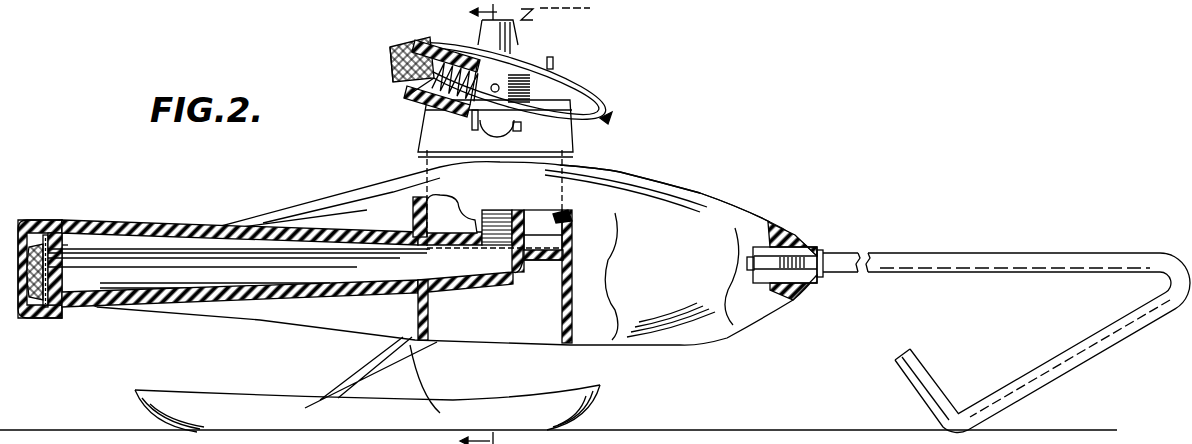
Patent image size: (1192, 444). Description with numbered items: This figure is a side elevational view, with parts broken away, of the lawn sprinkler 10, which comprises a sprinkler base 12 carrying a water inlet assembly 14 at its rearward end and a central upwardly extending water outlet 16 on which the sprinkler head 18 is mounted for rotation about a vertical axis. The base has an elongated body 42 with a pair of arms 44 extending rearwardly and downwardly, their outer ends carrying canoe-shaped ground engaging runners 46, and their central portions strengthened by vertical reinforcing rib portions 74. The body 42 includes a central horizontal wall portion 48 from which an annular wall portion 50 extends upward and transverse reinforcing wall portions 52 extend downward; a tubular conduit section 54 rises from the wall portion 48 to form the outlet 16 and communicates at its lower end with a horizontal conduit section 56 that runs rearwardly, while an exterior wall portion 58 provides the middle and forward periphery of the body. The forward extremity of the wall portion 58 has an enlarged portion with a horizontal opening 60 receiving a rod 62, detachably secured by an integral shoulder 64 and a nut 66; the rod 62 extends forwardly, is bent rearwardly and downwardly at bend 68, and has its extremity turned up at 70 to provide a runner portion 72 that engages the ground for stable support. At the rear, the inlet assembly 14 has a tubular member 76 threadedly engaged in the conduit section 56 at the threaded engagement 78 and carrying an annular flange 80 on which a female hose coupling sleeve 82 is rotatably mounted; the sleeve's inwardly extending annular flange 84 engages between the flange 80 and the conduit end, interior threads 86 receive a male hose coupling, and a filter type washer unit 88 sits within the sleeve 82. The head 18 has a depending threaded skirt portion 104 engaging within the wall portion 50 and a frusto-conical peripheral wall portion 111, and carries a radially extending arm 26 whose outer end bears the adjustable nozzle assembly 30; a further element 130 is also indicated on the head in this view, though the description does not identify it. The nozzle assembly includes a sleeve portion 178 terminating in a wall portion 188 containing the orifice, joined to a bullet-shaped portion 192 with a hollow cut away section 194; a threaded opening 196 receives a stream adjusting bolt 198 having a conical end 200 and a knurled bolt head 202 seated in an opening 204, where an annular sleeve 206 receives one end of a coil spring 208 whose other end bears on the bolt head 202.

The lawn sprinkler 10 is at (676, 152).
The sprinkler base 12 is at (296, 200).
The water inlet assembly 14 is at (56, 218).
The water outlet 16 is at (540, 213).
The sprinkler head 18 is at (593, 90).
The arm 26 is at (503, 130).
The adjustable nozzle assembly 30 is at (606, 118).
The body 42 is at (667, 338).
The arms 44 is at (380, 360).
The ground engaging runners 46 is at (410, 423).
The central horizontal wall portion 48 is at (570, 238).
The annular wall portion 50 is at (573, 222).
The transverse reinforcing wall portions 52 is at (560, 320).
The conduit section 54 is at (272, 220).
The conduit section 56 is at (367, 297).
The exterior wall portion 58 is at (710, 212).
The opening 60 is at (797, 277).
The rod 62 is at (940, 265).
The shoulder 64 is at (823, 250).
The nut 66 is at (760, 283).
The bend 68 is at (1160, 278).
The turned-up extremity 70 is at (925, 375).
The runner portion 72 is at (1037, 382).
The reinforcing rib portions 74 is at (420, 353).
The tubular member 76 is at (87, 272).
The threaded engagement 78 is at (92, 307).
The annular flange 80 is at (57, 317).
The female hose coupling sleeve 82 is at (33, 225).
The inwardly extending annular flange 84 is at (63, 230).
The interior threads 86 is at (20, 302).
The filter type washer unit 88 is at (50, 268).
The skirt portion 104 is at (443, 150).
The peripheral wall portion 111 is at (567, 138).
The stem 130 is at (518, 24).
The sleeve portion 178 is at (477, 107).
The wall portion 188 is at (530, 95).
The bullet-shaped portion 192 is at (600, 105).
The hollow cut away section 194 is at (550, 80).
The threaded opening 196 is at (443, 102).
The stream adjusting bolt 198 is at (507, 50).
The conical end 200 is at (500, 80).
The bolt head 202 is at (388, 58).
The opening 204 is at (395, 82).
The annular sleeve 206 is at (428, 45).
The coil spring 208 is at (462, 42).